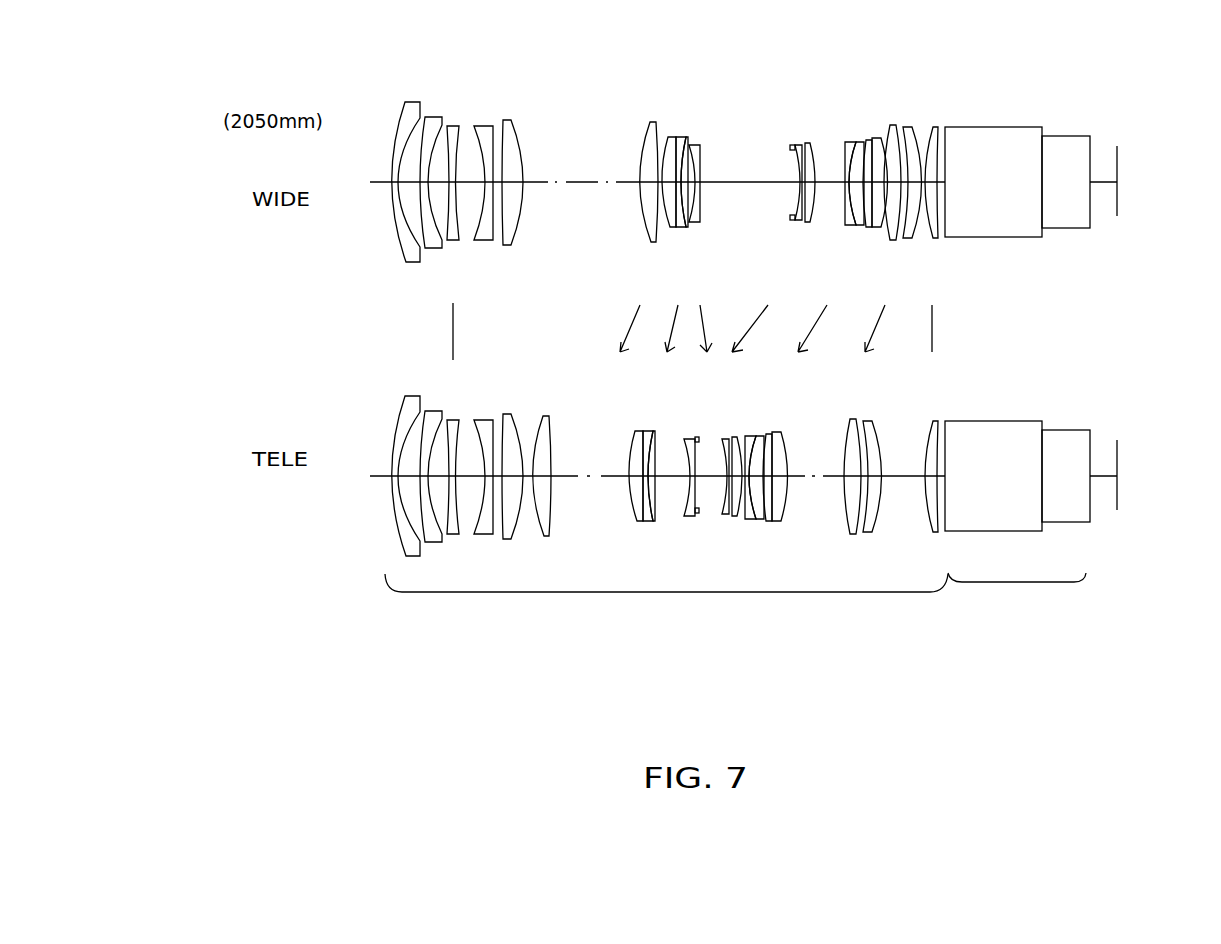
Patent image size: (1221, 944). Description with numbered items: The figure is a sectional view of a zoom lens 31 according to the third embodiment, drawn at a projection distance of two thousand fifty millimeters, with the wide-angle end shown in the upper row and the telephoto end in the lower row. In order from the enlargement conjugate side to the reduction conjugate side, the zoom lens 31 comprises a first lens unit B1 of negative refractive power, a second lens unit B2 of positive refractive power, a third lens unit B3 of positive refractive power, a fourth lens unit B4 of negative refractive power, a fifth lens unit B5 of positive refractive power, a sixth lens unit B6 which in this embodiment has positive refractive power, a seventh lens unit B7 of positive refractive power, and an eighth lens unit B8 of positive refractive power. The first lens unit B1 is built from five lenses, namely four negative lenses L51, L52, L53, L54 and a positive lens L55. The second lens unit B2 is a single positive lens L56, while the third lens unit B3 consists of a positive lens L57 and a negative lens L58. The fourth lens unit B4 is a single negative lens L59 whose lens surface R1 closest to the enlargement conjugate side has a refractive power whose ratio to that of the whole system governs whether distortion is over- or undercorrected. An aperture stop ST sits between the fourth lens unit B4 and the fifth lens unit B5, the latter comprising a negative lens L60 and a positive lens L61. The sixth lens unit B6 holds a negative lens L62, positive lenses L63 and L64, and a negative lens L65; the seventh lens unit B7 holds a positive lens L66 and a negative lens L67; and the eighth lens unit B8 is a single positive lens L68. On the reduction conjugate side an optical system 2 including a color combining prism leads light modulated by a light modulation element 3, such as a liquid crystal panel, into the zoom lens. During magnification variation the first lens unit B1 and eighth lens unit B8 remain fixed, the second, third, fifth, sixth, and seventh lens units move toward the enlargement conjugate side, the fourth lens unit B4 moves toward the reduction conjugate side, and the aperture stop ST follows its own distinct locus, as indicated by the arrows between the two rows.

The negative lens L51 is at (412, 102).
The negative lens L52 is at (438, 117).
The negative lens L53 is at (452, 127).
The negative lens L54 is at (482, 127).
The positive lens L55 is at (508, 120).
The positive lens L56 is at (653, 122).
The positive lens L57 is at (668, 137).
The negative lens L58 is at (680, 137).
The lens surface R1 is at (689, 136).
The negative lens L59 is at (700, 145).
The negative lens L60 is at (790, 145).
The positive lens L61 is at (807, 143).
The negative lens L62 is at (845, 142).
The positive lens L63 is at (852, 140).
The positive lens L64 is at (865, 137).
The negative lens L65 is at (873, 135).
The positive lens L66 is at (900, 127).
The negative lens L67 is at (908, 123).
The positive lens L68 is at (940, 123).
The aperture stop ST is at (790, 218).
The first lens unit B1 is at (467, 174).
The second lens unit B2 is at (633, 190).
The third lens unit B3 is at (678, 168).
The fourth lens unit B4 is at (716, 189).
The fifth lens unit B5 is at (792, 180).
The sixth lens unit B6 is at (851, 160).
The seventh lens unit B7 is at (927, 156).
The eighth lens unit B8 is at (955, 176).
The zoom lens 31 is at (640, 593).
The optical system 2 is at (1010, 583).
The light modulation element 3 is at (1117, 453).